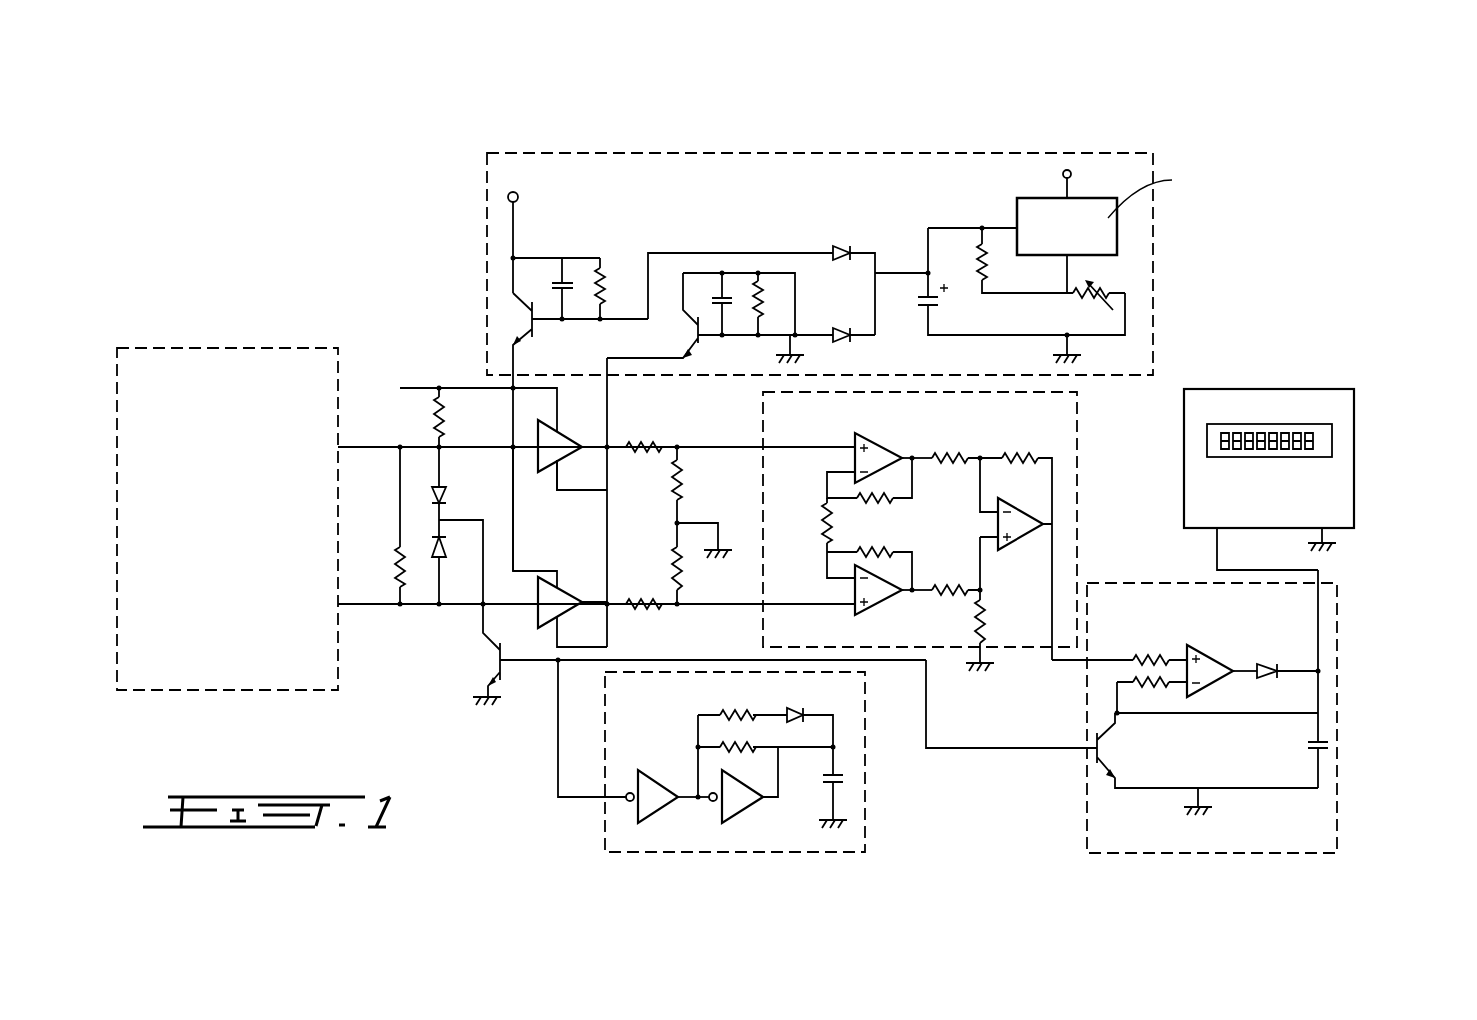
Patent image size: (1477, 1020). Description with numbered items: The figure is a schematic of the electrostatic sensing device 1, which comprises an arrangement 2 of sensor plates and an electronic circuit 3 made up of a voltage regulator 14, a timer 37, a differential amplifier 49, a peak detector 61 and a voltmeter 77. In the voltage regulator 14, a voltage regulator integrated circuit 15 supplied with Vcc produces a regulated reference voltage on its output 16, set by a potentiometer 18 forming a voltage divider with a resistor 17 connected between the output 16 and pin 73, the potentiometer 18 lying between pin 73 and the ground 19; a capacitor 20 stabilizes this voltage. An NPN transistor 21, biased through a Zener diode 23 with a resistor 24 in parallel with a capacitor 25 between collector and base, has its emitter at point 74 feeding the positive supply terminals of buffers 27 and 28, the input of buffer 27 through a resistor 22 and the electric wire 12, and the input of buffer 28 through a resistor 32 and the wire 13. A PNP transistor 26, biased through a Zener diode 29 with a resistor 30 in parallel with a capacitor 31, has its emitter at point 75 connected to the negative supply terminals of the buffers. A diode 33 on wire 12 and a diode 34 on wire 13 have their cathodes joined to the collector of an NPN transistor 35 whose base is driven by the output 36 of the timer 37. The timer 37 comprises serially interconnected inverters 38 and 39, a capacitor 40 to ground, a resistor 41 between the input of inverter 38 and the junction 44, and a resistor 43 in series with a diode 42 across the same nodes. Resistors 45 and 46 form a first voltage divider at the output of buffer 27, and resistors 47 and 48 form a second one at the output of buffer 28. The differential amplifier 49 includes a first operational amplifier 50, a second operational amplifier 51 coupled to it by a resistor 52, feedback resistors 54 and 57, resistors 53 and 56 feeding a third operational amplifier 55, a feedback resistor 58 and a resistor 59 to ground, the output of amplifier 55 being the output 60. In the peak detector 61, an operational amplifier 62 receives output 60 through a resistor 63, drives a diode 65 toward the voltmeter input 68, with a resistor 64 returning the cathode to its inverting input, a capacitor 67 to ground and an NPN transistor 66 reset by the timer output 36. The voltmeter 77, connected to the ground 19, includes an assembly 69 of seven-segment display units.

The electrostatic sensing device 1 is at (262, 240).
The arrangement of sensor plates 2 is at (283, 358).
The electronic circuit 3 is at (537, 138).
The electric wire 12 is at (368, 445).
The wire 13 is at (370, 614).
The voltage regulator 14 is at (1016, 172).
The voltage regulator integrated circuit 15 is at (1105, 240).
The output 16 is at (945, 226).
The resistor 17 is at (982, 245).
The potentiometer 18 is at (1105, 284).
The ground 19 is at (806, 362).
The capacitor 20 is at (940, 306).
The NPN transistor 21 is at (532, 319).
The resistor 22 is at (446, 425).
The Zener diode 23 is at (841, 247).
The resistor 24 is at (603, 277).
The capacitor 25 is at (558, 283).
The PNP transistor 26 is at (695, 331).
The buffer 27 is at (547, 470).
The buffer 28 is at (560, 595).
The Zener diode 29 is at (840, 327).
The resistor 30 is at (757, 283).
The capacitor 31 is at (712, 300).
The resistor 32 is at (398, 560).
The diode 33 is at (447, 497).
The diode 34 is at (444, 562).
The NPN transistor 35 is at (488, 661).
The output 36 is at (580, 800).
The timer 37 is at (850, 842).
The inverter 38 is at (752, 805).
The inverter 39 is at (666, 810).
The capacitor 40 is at (848, 780).
The resistor 41 is at (712, 740).
The diode 42 is at (800, 718).
The resistor 43 is at (712, 707).
The junction 44 is at (698, 805).
The resistor 45 is at (648, 445).
The resistor 46 is at (683, 482).
The resistor 47 is at (647, 610).
The resistor 48 is at (672, 565).
The differential amplifier 49 is at (1073, 483).
The first operational amplifier 50 is at (855, 462).
The operational amplifier 51 is at (862, 606).
The resistor 52 is at (822, 520).
The resistor 53 is at (950, 455).
The resistor 54 is at (850, 500).
The third operational amplifier 55 is at (1012, 506).
The resistor 56 is at (942, 596).
The resistor 57 is at (878, 548).
The resistor 58 is at (1016, 455).
The resistor 59 is at (986, 628).
The output 60 is at (1060, 662).
The peak detector 61 is at (1337, 688).
The operational amplifier 62 is at (1218, 665).
The resistor 63 is at (1140, 656).
The resistor 64 is at (1134, 678).
The diode 65 is at (1265, 665).
The NPN transistor 66 is at (1102, 749).
The capacitor 67 is at (1308, 742).
The input 68 is at (1215, 538).
The assembly of seven-segment display units 69 is at (1330, 452).
The pin 73 is at (1066, 275).
The point 74 is at (513, 388).
The point 75 is at (607, 490).
The voltmeter 77 is at (1331, 395).